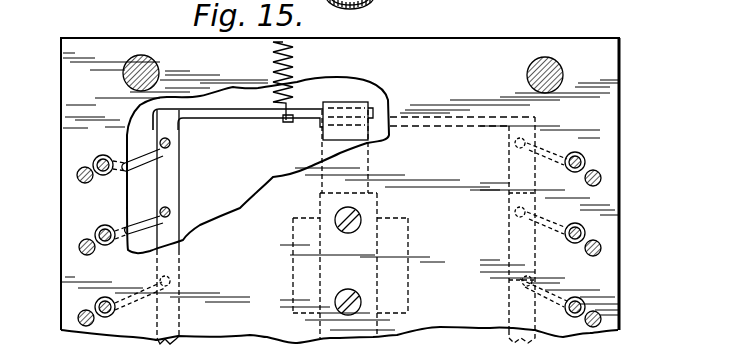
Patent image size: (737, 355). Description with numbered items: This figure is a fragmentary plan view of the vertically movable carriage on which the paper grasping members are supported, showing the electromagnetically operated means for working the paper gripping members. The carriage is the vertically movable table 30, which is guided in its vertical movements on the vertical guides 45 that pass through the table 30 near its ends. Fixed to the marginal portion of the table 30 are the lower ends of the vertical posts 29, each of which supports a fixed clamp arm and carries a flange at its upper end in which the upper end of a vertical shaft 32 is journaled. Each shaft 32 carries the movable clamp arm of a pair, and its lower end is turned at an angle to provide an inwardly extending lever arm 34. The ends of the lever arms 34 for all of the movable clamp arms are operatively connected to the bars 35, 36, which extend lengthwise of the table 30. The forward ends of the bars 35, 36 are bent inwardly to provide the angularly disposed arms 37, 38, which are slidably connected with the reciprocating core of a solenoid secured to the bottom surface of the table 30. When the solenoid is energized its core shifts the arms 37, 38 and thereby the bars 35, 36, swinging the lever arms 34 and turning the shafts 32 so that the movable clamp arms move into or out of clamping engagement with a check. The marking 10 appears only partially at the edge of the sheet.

The reference (partial) 10 is at (26, 7).
The mounting plate 30 is at (466, 45).
The mounting hole 45 is at (139, 72).
The fastening hole 29 is at (80, 314).
The pivot hole 32 is at (102, 195).
The pin and slot 34 is at (145, 210).
The cam lever 36 is at (180, 182).
The actuating rod 37 is at (253, 110).
The slide block 38 is at (448, 120).
The guide strip 35 is at (509, 194).